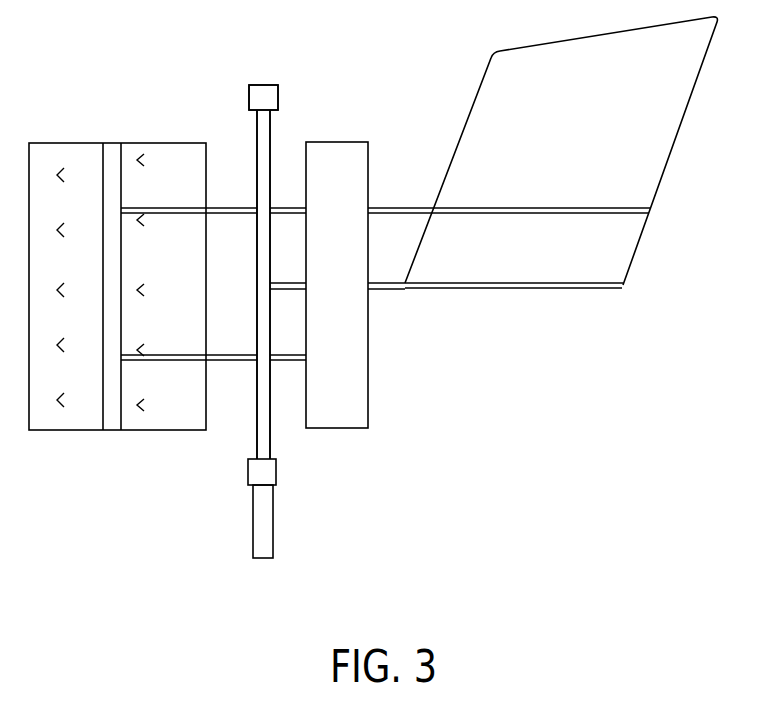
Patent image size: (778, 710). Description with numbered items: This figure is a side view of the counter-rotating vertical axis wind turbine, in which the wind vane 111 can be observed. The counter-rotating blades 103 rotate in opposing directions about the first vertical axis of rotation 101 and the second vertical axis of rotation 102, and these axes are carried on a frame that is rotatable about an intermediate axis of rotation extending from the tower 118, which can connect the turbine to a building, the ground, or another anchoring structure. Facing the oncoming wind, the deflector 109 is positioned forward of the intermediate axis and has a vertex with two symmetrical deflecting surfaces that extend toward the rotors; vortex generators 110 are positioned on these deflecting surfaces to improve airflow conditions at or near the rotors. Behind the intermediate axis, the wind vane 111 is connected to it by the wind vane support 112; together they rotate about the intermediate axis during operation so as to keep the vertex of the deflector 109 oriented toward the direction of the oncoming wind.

The first vertical axis of rotation 101 is at (270, 437).
The second vertical axis of rotation 102 is at (263, 272).
The counter-rotating blades 103 is at (333, 142).
The deflector 109 is at (57, 143).
The vortex generators 110 is at (58, 402).
The wind vane 111 is at (678, 128).
The wind vane support 112 is at (507, 288).
The tower 118 is at (274, 527).